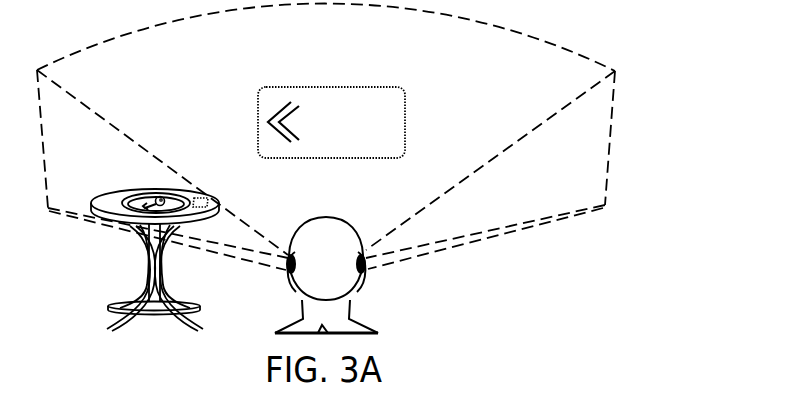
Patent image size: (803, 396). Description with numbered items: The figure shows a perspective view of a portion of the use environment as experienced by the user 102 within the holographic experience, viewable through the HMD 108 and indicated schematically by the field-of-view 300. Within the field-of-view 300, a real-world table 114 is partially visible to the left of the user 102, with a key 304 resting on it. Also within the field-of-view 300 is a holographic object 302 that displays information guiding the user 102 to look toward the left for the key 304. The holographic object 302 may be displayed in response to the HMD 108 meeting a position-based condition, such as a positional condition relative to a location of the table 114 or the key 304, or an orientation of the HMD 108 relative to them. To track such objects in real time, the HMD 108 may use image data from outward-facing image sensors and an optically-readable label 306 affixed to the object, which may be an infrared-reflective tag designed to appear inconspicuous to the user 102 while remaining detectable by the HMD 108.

The field-of-view 300 is at (567, 49).
The holographic object 302 is at (399, 84).
The real-world table 114 is at (133, 187).
The key 304 is at (160, 197).
The optically-readable label 306 is at (204, 198).
The user 102 is at (340, 273).
The HMD 108 is at (292, 289).